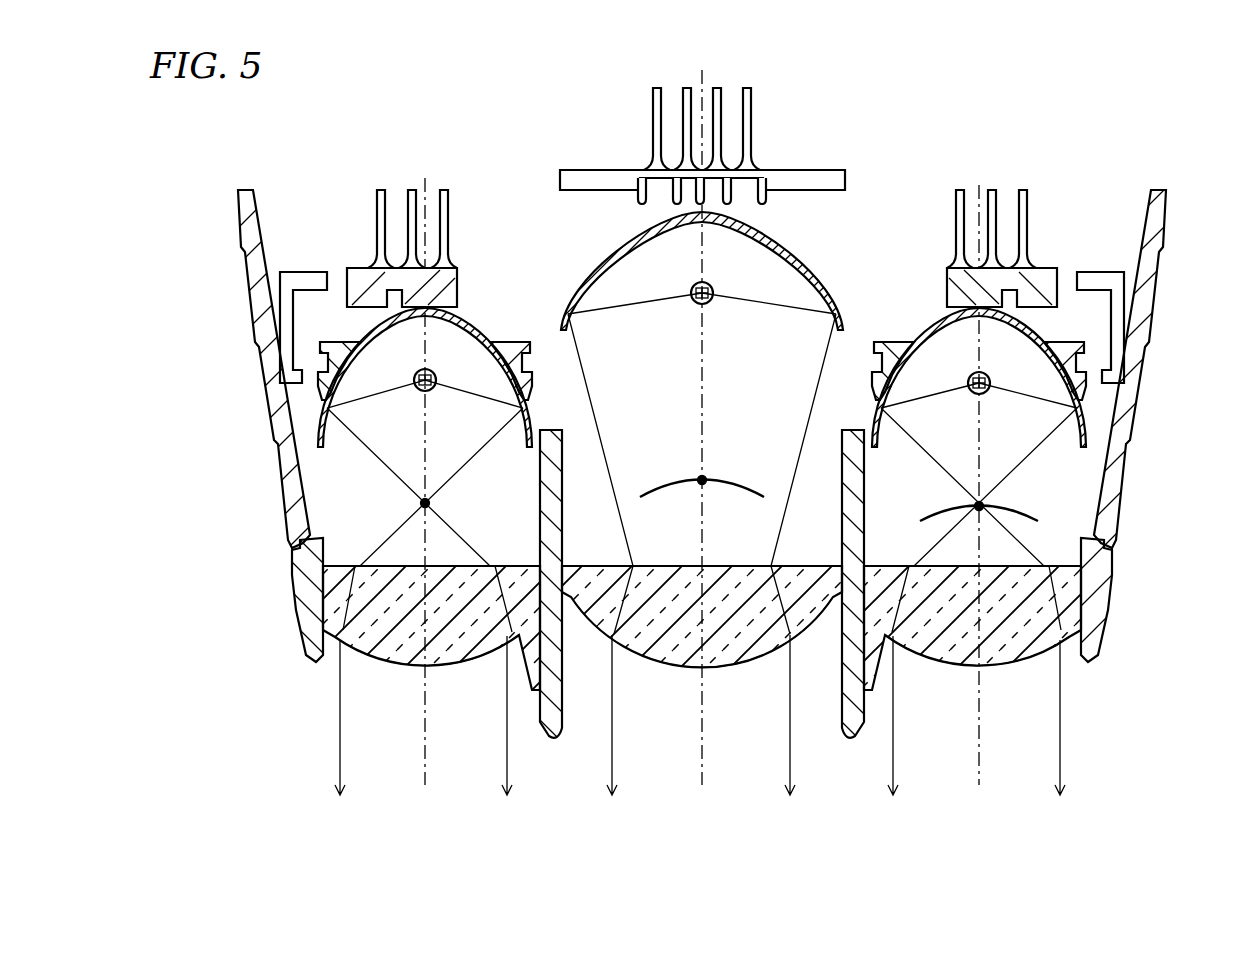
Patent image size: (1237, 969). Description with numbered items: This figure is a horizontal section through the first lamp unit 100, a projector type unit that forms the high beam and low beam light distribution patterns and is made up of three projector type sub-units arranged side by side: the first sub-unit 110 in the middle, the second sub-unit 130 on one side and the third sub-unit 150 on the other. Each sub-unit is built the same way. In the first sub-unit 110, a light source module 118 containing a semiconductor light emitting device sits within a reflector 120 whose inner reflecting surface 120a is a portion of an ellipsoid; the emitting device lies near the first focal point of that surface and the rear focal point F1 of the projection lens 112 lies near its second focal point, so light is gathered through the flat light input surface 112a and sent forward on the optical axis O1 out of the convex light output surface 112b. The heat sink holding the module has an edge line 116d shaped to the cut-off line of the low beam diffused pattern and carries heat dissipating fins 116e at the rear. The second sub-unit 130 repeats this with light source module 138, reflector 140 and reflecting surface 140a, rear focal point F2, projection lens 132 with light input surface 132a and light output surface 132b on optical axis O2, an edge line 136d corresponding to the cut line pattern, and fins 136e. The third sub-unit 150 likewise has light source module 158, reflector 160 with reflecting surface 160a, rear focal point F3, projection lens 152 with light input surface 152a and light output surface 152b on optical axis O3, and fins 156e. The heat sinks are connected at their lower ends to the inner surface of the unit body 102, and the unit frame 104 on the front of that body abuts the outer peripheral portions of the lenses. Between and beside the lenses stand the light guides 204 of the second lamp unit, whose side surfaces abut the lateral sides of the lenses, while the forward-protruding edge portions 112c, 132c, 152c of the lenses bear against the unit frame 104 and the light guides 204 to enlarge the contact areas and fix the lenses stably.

The first lamp unit 100 is at (172, 452).
The unit body 102 is at (262, 305).
The unit frame 104 is at (293, 600).
The first sub-unit 110 is at (711, 64).
The projection lens 112 is at (741, 670).
The light input surface 112a is at (790, 565).
The light output surface 112b is at (622, 640).
The edge portion 112c is at (606, 605).
The edge line 116d is at (658, 492).
The heat dissipating fins 116e is at (751, 125).
The light source module 118 is at (710, 284).
The reflector 120 is at (612, 246).
The reflecting surface 120a is at (604, 276).
The second sub-unit 130 is at (1007, 160).
The projection lens 132 is at (943, 672).
The light input surface 132a is at (906, 565).
The light output surface 132b is at (1042, 650).
The edge portion 132c is at (1076, 640).
The edge line 136d is at (924, 519).
The heat dissipating fins 136e is at (1027, 218).
The light source module 138 is at (1000, 362).
The reflector 140 is at (936, 322).
The reflecting surface 140a is at (918, 336).
The third sub-unit 150 is at (415, 160).
The projection lens 152 is at (468, 670).
The light input surface 152a is at (506, 565).
The light output surface 152b is at (360, 650).
The edge portion 152c is at (330, 640).
The heat dissipating fins 156e is at (447, 222).
The light source module 158 is at (438, 378).
The reflector 160 is at (466, 318).
The reflecting surface 160a is at (474, 316).
The light guide 204 is at (553, 742).
The rear focal point F1 is at (706, 479).
The rear focal point F2 is at (983, 505).
The rear focal point F3 is at (429, 503).
The optical axis O1 is at (702, 778).
The optical axis O2 is at (979, 772).
The optical axis O3 is at (425, 772).